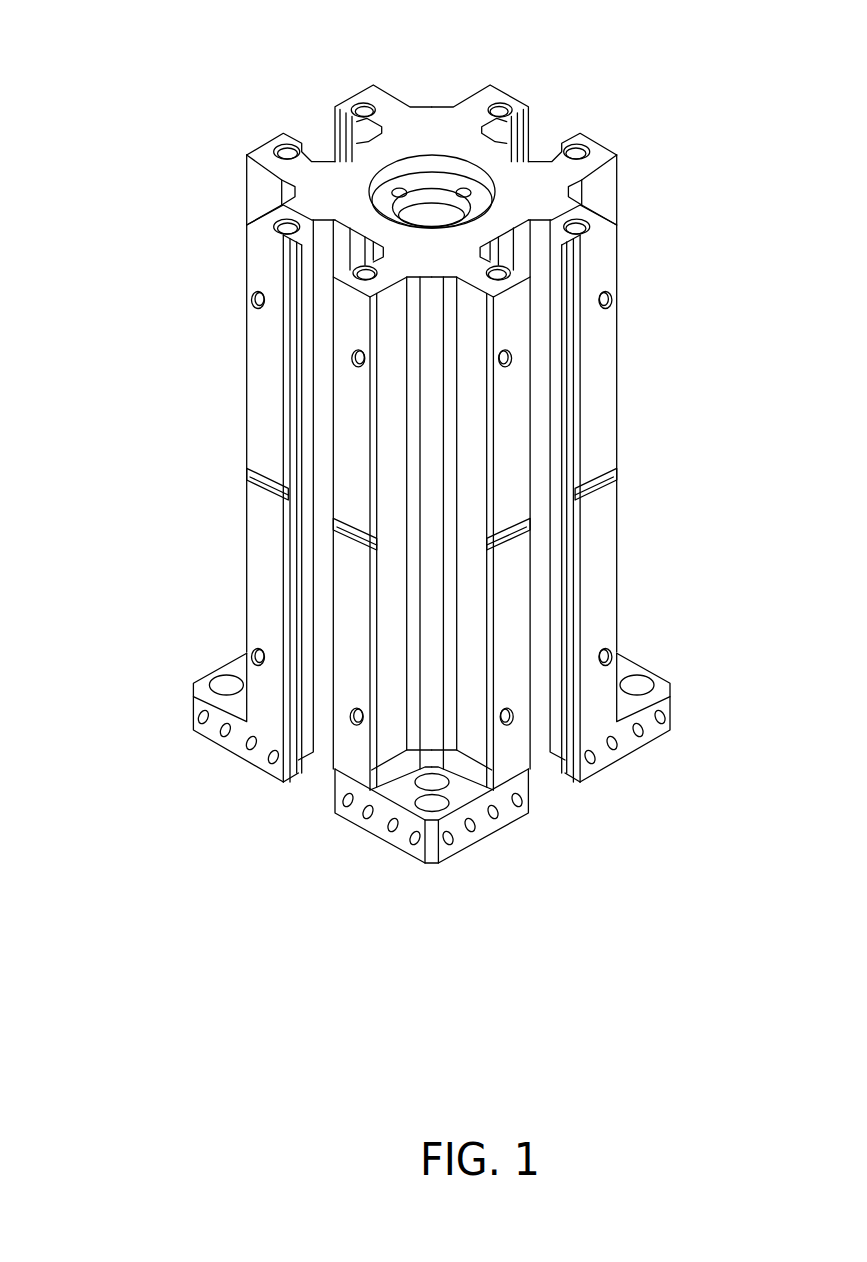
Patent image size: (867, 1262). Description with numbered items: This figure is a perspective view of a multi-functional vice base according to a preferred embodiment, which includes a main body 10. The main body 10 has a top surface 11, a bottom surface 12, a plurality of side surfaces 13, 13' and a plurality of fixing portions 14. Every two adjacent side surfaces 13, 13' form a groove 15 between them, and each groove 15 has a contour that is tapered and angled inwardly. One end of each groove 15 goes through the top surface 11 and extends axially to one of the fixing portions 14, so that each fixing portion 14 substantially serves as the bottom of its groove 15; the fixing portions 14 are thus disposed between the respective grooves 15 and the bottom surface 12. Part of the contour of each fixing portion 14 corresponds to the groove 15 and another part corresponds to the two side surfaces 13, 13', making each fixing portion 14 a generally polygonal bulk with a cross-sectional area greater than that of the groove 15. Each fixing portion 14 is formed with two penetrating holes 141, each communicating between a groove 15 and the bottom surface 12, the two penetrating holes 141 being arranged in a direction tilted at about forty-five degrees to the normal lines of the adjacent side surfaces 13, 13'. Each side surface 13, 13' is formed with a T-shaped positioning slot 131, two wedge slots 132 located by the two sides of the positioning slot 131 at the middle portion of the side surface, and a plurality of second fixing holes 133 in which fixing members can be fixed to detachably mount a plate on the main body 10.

The main body 10 is at (162, 255).
The top surface 11 is at (427, 125).
The bottom surface 12 is at (431, 810).
The side surface 13 is at (616, 457).
The side surface 13' is at (226, 457).
The positioning slot 131 is at (325, 283).
The wedge slot 132 is at (250, 488).
The second fixing hole 133 is at (258, 655).
The fixing portion 14 is at (460, 868).
The penetrating hole 141 is at (427, 800).
The groove 15 is at (432, 405).